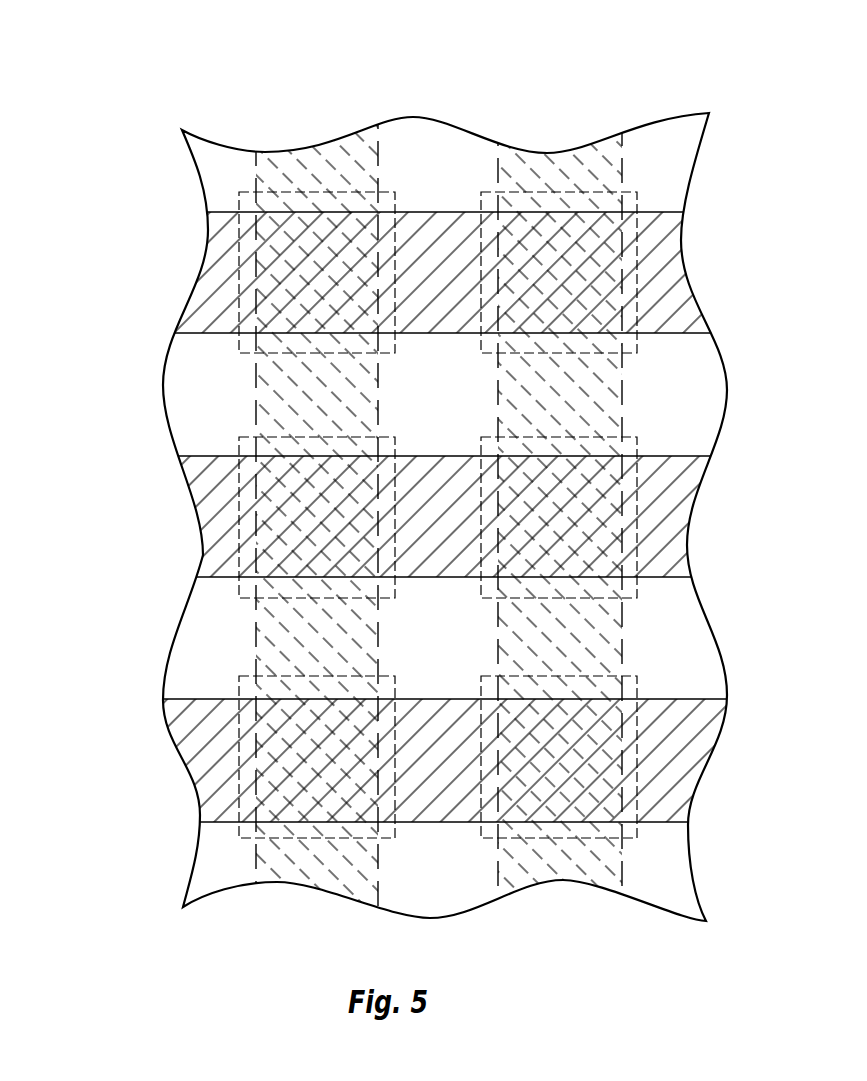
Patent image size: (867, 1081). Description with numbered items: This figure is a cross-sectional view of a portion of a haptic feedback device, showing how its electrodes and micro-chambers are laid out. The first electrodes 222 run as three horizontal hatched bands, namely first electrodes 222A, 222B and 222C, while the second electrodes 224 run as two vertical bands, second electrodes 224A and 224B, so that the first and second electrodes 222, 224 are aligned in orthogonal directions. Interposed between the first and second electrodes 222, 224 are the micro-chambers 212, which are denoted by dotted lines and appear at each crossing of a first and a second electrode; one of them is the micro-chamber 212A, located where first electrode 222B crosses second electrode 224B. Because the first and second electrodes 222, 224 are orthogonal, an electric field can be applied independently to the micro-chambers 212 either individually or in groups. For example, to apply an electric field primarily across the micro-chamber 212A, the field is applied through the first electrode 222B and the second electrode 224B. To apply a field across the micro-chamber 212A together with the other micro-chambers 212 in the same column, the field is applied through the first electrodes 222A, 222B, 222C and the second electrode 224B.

The micro-chambers 212 is at (238, 192).
The micro-chamber 212A is at (638, 438).
The first electrodes 222 is at (102, 420).
The first electrode 222A is at (198, 337).
The first electrode 222B is at (223, 578).
The first electrode 222C is at (203, 823).
The second electrodes 224 is at (459, 65).
The second electrode 224A is at (382, 173).
The second electrode 224B is at (498, 180).